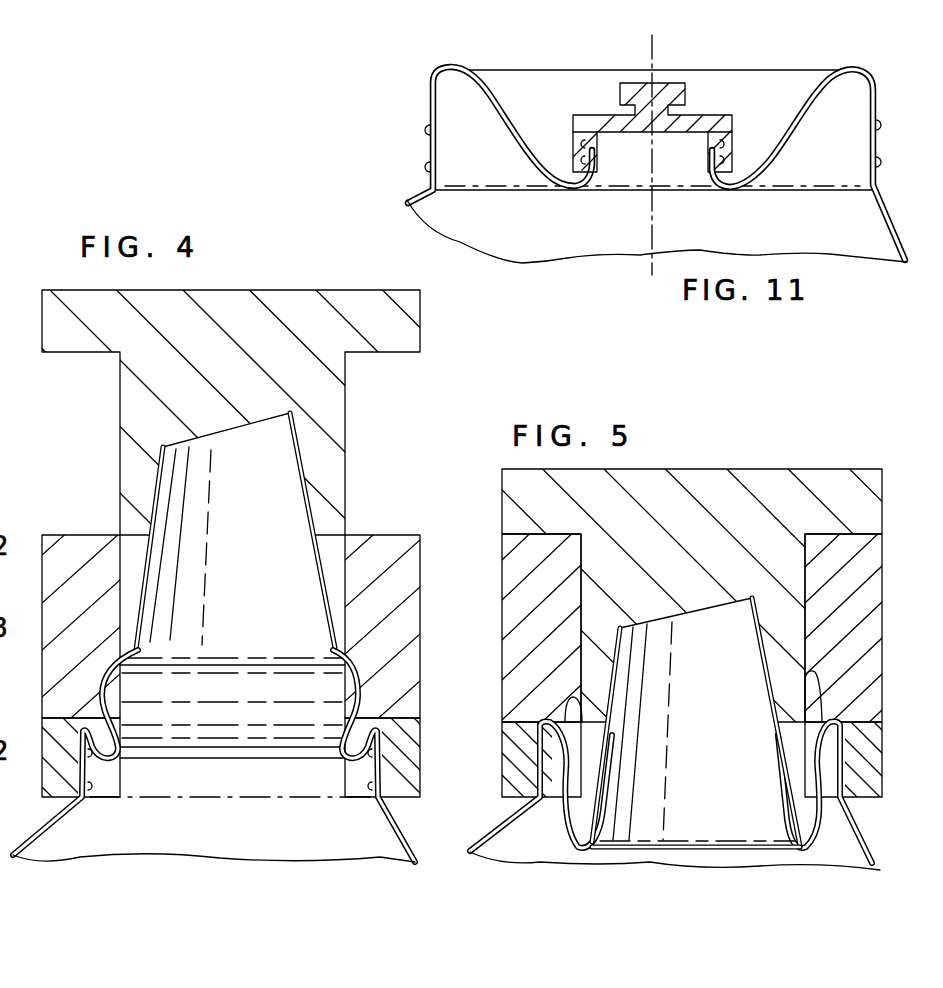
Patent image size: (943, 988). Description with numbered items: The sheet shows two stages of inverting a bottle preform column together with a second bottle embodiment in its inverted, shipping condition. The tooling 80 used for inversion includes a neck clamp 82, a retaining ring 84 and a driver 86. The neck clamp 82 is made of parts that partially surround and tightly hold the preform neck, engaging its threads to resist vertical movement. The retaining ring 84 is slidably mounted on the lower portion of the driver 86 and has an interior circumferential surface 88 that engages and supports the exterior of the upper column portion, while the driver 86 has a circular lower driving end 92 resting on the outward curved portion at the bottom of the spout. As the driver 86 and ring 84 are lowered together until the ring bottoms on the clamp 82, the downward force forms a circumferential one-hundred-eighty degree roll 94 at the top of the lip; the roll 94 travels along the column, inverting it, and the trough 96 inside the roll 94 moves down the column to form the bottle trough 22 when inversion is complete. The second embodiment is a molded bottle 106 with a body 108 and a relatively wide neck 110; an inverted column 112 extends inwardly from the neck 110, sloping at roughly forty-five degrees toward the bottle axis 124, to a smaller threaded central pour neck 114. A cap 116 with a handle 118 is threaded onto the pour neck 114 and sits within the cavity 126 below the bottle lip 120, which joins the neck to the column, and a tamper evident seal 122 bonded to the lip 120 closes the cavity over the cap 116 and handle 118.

In FIG. 5, the bottle trough 22 is at (805, 810).
In FIG. 4, the tooling 80 is at (258, 282).
In FIG. 5, the tooling 80 is at (717, 449).
In FIG. 4, the neck clamp 82 is at (422, 737).
In FIG. 5, the neck clamp 82 is at (502, 787).
In FIG. 4, the retaining ring 84 is at (392, 535).
In FIG. 5, the retaining ring 84 is at (502, 573).
In FIG. 4, the driver 86 is at (347, 410).
In FIG. 5, the driver 86 is at (835, 468).
In FIG. 4, the interior circumferential surface 88 is at (246, 752).
In FIG. 5, the interior circumferential surface 88 is at (568, 690).
In FIG. 4, the circular lower driving end 92 is at (345, 650).
In FIG. 4, the circumferential 180 degree roll 94 is at (118, 752).
In FIG. 4, the trough 96 is at (343, 752).
In FIG. 11, the molded bottle 106 is at (388, 105).
In FIG. 11, the body 108 is at (897, 232).
In FIG. 11, the neck 110 is at (430, 147).
In FIG. 11, the inverted column 112 is at (512, 165).
In FIG. 11, the central pour neck 114 is at (597, 152).
In FIG. 11, the cap 116 is at (733, 145).
In FIG. 11, the handle 118 is at (620, 97).
In FIG. 11, the bottle lip 120 is at (450, 64).
In FIG. 11, the tamper evident seal 122 is at (807, 69).
In FIG. 11, the bottle axis 124 is at (652, 40).
In FIG. 11, the cavity 126 is at (545, 145).